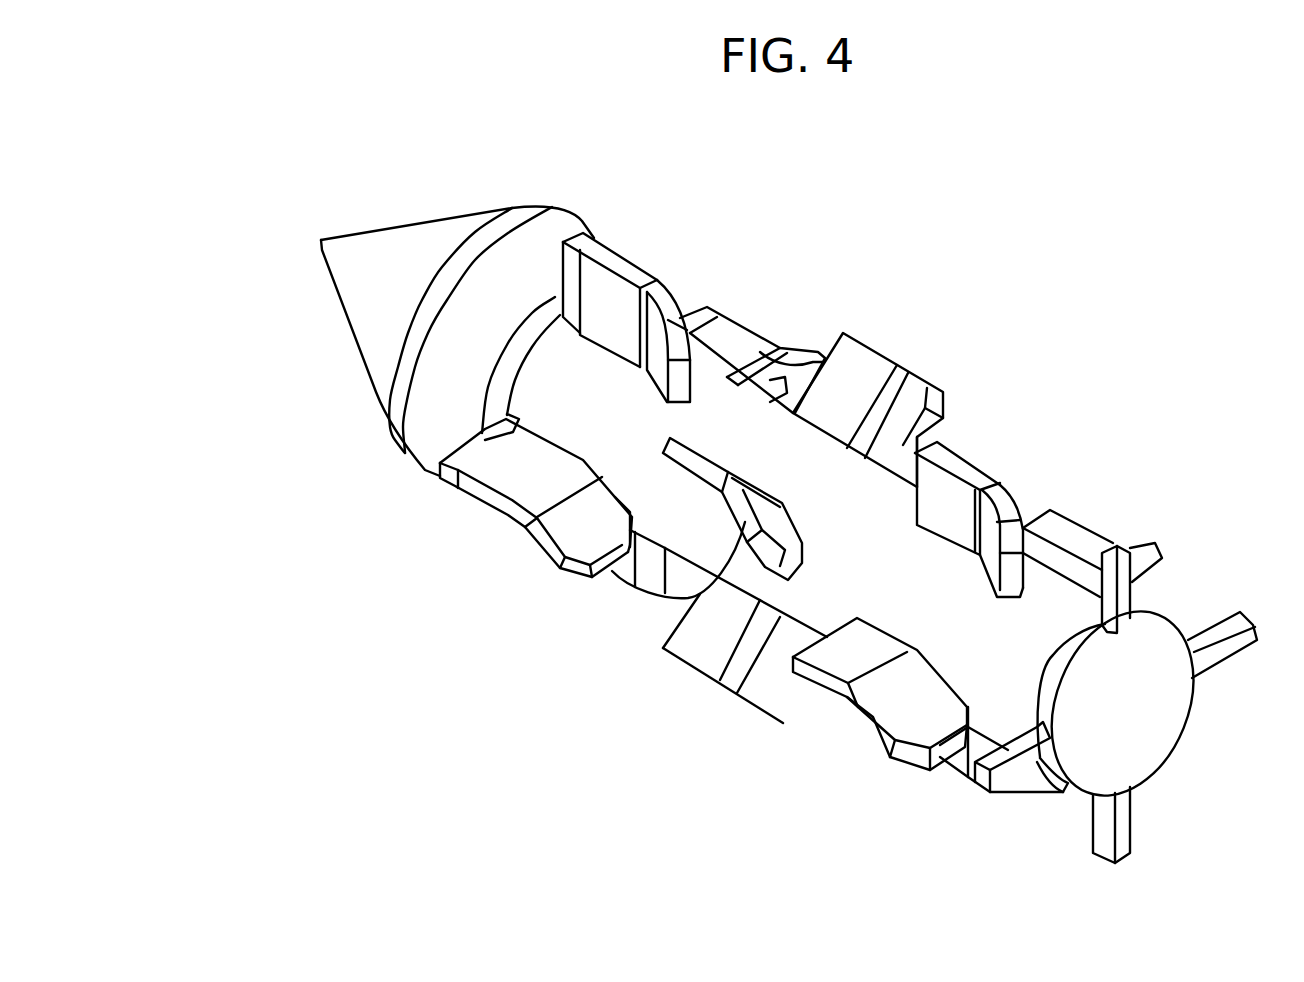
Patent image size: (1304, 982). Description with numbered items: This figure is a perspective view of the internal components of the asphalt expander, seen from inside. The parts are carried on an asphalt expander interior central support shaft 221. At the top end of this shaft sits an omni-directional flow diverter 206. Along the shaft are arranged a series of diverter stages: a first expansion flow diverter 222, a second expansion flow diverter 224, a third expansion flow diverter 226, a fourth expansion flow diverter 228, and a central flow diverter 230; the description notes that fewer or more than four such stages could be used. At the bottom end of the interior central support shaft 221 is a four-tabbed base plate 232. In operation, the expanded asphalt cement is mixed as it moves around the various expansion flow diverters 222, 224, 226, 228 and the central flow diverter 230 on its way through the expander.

The omni-directional flow diverter 206 is at (320, 243).
The asphalt expander interior central support shaft 221 is at (791, 544).
The first expansion flow diverter 222 is at (503, 472).
The second expansion flow diverter 224 is at (717, 310).
The third expansion flow diverter 226 is at (842, 660).
The fourth expansion flow diverter 228 is at (1067, 540).
The central flow diverter 230 is at (717, 573).
The four-tabbed base plate 232 is at (1116, 704).